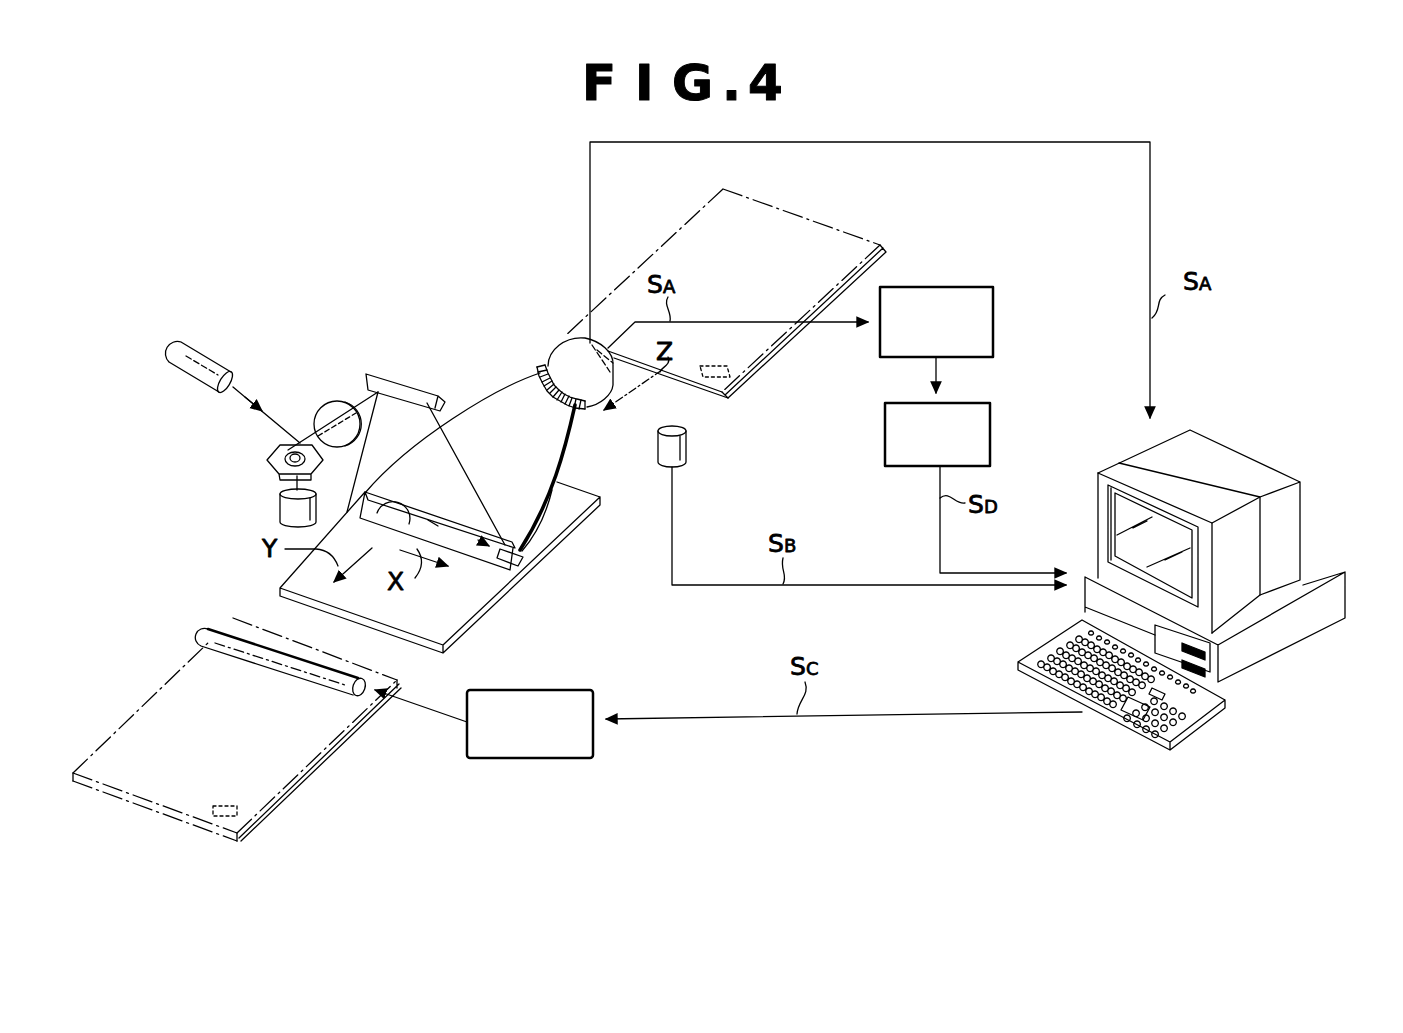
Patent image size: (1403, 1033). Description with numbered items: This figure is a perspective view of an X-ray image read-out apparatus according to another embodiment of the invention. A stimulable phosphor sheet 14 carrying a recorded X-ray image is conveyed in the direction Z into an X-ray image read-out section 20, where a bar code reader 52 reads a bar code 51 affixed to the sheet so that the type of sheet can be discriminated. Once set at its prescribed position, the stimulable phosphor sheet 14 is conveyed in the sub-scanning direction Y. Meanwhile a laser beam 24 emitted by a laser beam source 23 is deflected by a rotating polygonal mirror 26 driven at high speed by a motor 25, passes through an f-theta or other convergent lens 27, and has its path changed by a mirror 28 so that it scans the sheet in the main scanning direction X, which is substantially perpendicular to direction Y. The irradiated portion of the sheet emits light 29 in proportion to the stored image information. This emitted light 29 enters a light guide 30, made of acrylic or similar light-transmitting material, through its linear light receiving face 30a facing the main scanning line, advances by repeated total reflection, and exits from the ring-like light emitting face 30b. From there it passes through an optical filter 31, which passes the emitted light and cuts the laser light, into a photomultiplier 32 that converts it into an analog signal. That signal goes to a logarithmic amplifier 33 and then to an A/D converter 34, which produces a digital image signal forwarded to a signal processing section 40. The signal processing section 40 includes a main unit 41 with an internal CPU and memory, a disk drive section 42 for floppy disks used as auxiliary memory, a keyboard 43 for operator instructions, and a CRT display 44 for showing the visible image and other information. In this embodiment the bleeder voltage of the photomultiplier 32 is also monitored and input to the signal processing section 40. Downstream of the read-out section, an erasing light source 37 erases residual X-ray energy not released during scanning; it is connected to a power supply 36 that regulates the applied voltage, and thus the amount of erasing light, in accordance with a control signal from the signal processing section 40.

The stimulable phosphor sheet 14 is at (878, 243).
The X-ray image read-out section 20 is at (394, 347).
The laser beam source 23 is at (198, 350).
The laser beam 24 is at (250, 403).
The motor 25 is at (281, 507).
The rotating polygonal mirror 26 is at (271, 457).
The convergent lens 27 is at (325, 401).
The mirror 28 is at (433, 377).
The emitted light 29 is at (396, 506).
The light guide 30 is at (510, 415).
The light receiving face 30a is at (533, 556).
The light emitting face 30b is at (572, 418).
The optical filter 31 is at (543, 368).
The photomultiplier 32 is at (570, 346).
The logarithmic amplifier 33 is at (995, 312).
The A/D converter 34 is at (992, 433).
The power supply 36 is at (575, 692).
The erasing light source 37 is at (205, 627).
The signal processing section 40 is at (1197, 576).
The main unit 41 is at (1318, 567).
The disk drive section 42 is at (1213, 650).
The keyboard 43 is at (1200, 700).
The CRT display 44 is at (1118, 520).
The bar code 51 is at (757, 389).
The bar code reader 52 is at (688, 452).